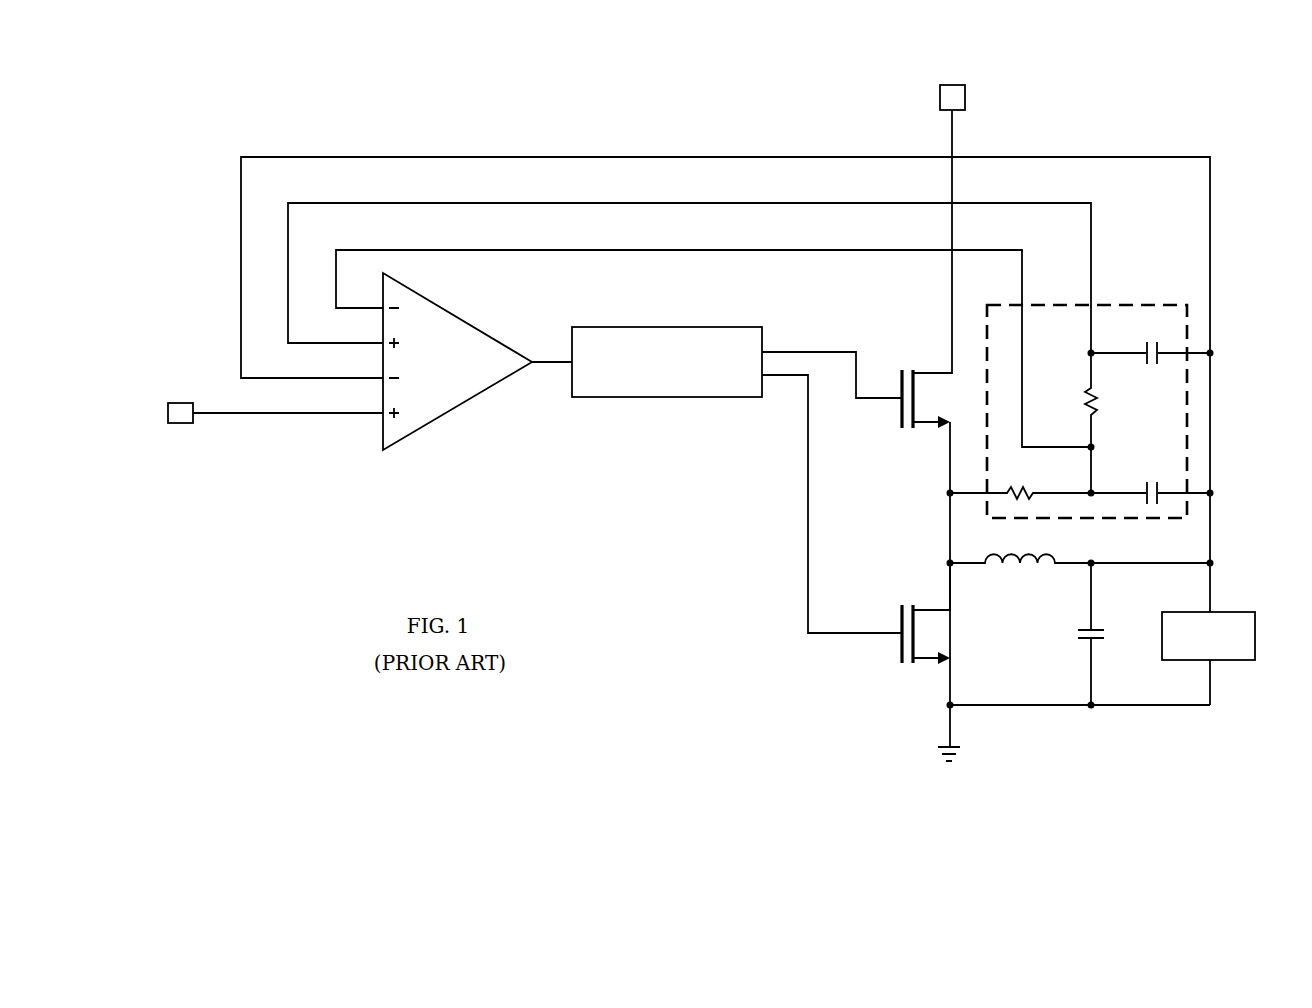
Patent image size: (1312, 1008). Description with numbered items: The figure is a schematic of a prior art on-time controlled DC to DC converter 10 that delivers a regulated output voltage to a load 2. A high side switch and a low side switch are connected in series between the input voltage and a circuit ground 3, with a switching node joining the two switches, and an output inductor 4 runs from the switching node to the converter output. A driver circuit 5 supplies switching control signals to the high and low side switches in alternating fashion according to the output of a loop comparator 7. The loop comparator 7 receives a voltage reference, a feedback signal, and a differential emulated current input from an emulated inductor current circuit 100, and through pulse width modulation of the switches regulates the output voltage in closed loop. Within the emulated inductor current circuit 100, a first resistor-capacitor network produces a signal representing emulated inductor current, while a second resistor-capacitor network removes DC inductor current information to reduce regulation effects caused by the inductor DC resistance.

The on-time controlled DC to DC converter 10 is at (312, 106).
The loop comparator 7 is at (449, 375).
The driver circuit 5 is at (665, 399).
The emulated inductor current circuit 100 is at (1127, 306).
The output inductor 4 is at (1050, 541).
The load 2 is at (1256, 635).
The circuit ground 3 is at (934, 755).